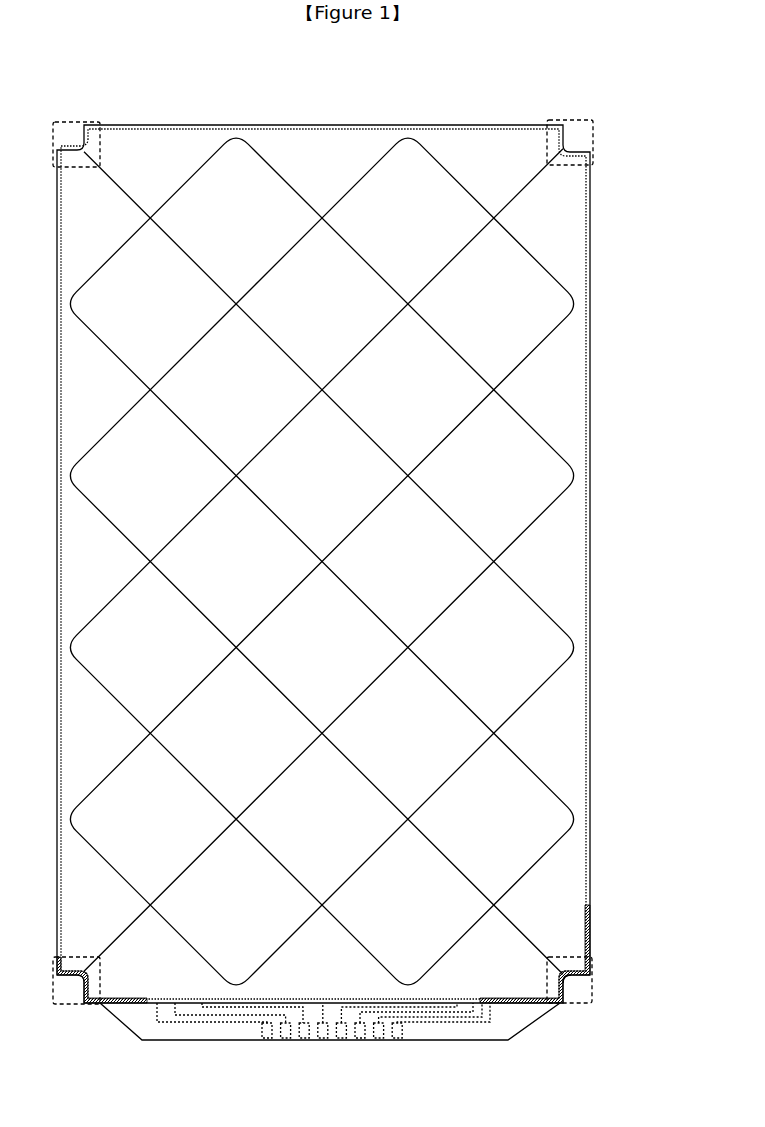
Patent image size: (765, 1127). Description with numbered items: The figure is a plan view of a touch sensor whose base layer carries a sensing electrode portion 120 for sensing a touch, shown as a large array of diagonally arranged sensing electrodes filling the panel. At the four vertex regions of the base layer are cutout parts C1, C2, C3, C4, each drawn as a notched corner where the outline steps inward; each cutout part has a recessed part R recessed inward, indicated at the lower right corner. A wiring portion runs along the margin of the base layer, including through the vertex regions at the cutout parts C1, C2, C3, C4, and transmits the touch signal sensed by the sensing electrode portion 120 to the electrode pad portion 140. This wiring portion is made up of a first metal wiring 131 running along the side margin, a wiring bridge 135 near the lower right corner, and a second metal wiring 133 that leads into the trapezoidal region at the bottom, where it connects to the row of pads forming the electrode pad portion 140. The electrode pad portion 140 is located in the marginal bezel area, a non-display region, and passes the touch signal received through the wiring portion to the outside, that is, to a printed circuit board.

The sensing electrode portion 120 is at (520, 335).
The first metal wiring 131 is at (591, 858).
The second metal wiring 133 is at (462, 1040).
The wiring bridge 135 is at (592, 923).
The electrode pad portion 140 is at (303, 1040).
The cutout part C1 is at (76, 121).
The cutout part C2 is at (571, 120).
The cutout part C3 is at (571, 1004).
The cutout part C4 is at (76, 1004).
The recessed part R is at (578, 990).